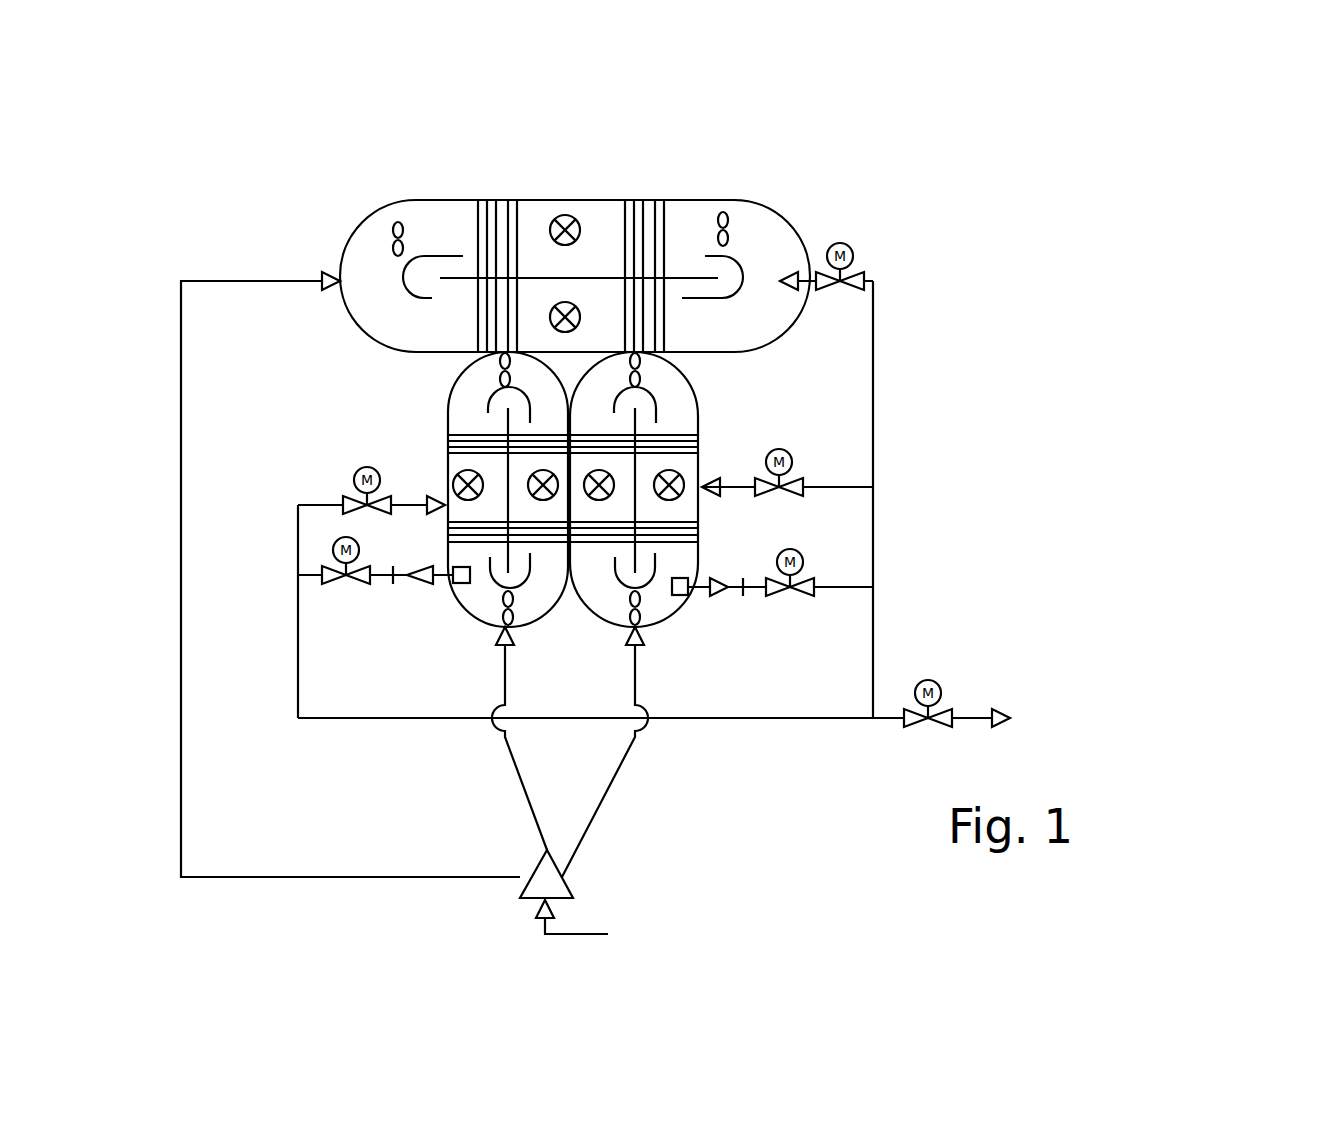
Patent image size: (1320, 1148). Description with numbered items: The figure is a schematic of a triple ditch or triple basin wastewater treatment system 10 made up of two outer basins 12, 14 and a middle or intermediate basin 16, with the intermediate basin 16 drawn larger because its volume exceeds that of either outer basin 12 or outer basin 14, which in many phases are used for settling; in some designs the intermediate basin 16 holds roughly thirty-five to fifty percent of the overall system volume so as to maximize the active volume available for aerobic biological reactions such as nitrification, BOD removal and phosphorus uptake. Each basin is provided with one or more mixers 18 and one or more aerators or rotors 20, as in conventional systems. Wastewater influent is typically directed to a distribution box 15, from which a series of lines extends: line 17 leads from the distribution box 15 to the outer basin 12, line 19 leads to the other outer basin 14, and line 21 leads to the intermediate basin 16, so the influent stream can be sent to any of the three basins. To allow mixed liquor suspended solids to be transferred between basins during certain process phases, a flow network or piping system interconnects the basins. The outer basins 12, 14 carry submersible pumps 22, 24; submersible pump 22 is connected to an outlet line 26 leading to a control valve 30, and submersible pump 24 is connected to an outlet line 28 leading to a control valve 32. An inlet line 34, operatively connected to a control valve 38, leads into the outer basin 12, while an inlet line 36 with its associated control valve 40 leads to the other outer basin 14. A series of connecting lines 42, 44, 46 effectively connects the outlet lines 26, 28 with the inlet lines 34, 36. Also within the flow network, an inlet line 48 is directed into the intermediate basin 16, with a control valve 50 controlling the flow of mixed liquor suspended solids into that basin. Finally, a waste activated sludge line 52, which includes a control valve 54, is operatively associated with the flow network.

The triple basin wastewater treatment system 10 is at (700, 152).
The outer basin 12 is at (700, 392).
The outer basin 14 is at (447, 389).
The distribution box 15 is at (550, 887).
The intermediate basin 16 is at (440, 200).
The line 17 is at (603, 795).
The mixers 18 is at (731, 212).
The line 19 is at (512, 782).
The aerators or rotors 20 is at (566, 214).
The line 21 is at (283, 876).
The submersible pump 22 is at (690, 576).
The submersible pump 24 is at (452, 585).
The outlet line 26 is at (833, 590).
The outlet line 28 is at (298, 582).
The control valve 30 is at (802, 556).
The control valve 32 is at (332, 553).
The inlet line 34 is at (833, 487).
The inlet line 36 is at (316, 505).
The control valve 38 is at (790, 452).
The control valve 40 is at (368, 468).
The connecting line 42 is at (298, 686).
The connecting line 44 is at (603, 720).
The connecting line 46 is at (873, 598).
The inlet line 48 is at (873, 298).
The control valve 50 is at (843, 243).
The waste activated sludge line 52 is at (890, 726).
The control valve 54 is at (941, 686).